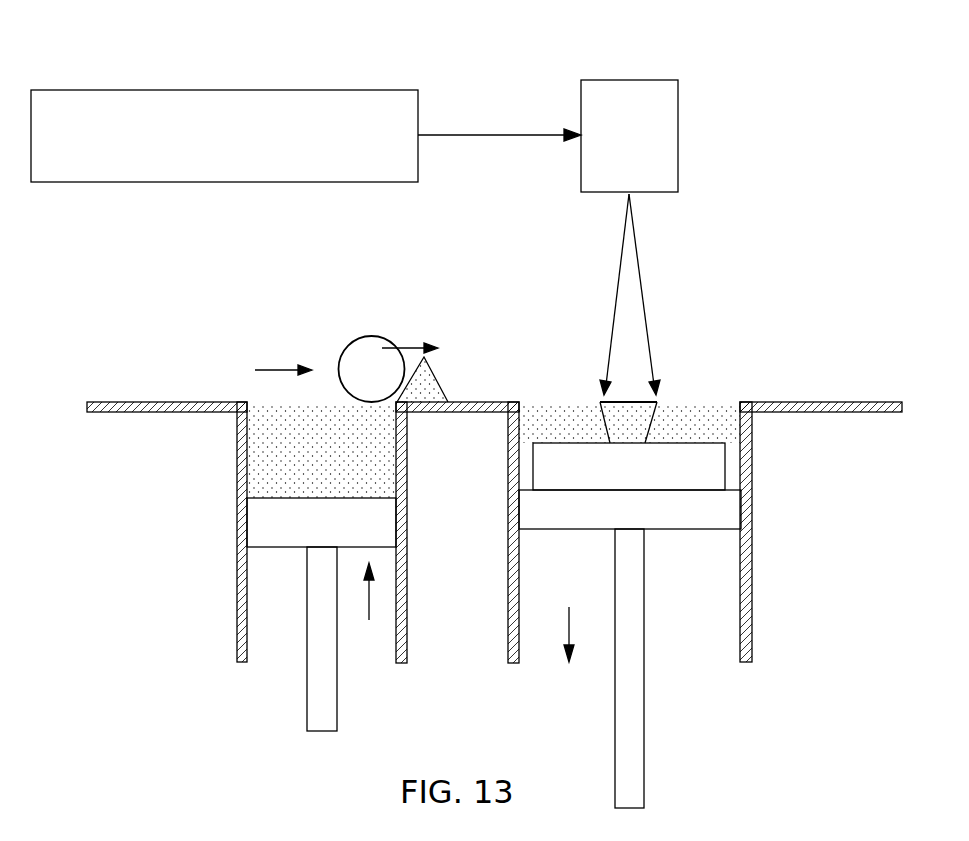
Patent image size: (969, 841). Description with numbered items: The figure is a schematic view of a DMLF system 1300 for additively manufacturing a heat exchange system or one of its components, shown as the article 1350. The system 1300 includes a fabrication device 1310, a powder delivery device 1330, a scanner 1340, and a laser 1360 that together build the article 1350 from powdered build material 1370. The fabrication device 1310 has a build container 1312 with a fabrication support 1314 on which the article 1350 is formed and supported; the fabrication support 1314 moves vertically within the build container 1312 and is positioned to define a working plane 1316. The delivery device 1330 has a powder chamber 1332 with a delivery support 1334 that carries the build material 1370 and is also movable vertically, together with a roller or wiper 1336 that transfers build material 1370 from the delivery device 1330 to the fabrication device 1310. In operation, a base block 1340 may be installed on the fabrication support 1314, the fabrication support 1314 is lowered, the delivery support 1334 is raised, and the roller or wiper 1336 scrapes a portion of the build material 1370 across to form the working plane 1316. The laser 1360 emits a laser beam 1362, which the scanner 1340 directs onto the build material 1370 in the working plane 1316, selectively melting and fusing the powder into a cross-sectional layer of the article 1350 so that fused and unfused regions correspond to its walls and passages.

The DMLF system 1300 is at (808, 95).
The fabrication device 1310 is at (790, 536).
The build container 1312 is at (749, 428).
The fabrication support 1314 is at (695, 530).
The working plane 1316 is at (720, 407).
The powder delivery device 1330 is at (145, 510).
The powder chamber 1332 is at (240, 465).
The delivery support 1334 is at (255, 520).
The roller or wiper 1336 is at (372, 337).
The scanner 1340 is at (628, 80).
The article 1350 is at (584, 394).
The laser 1360 is at (232, 90).
The laser beam 1362 is at (502, 135).
The build material 1370 is at (257, 443).